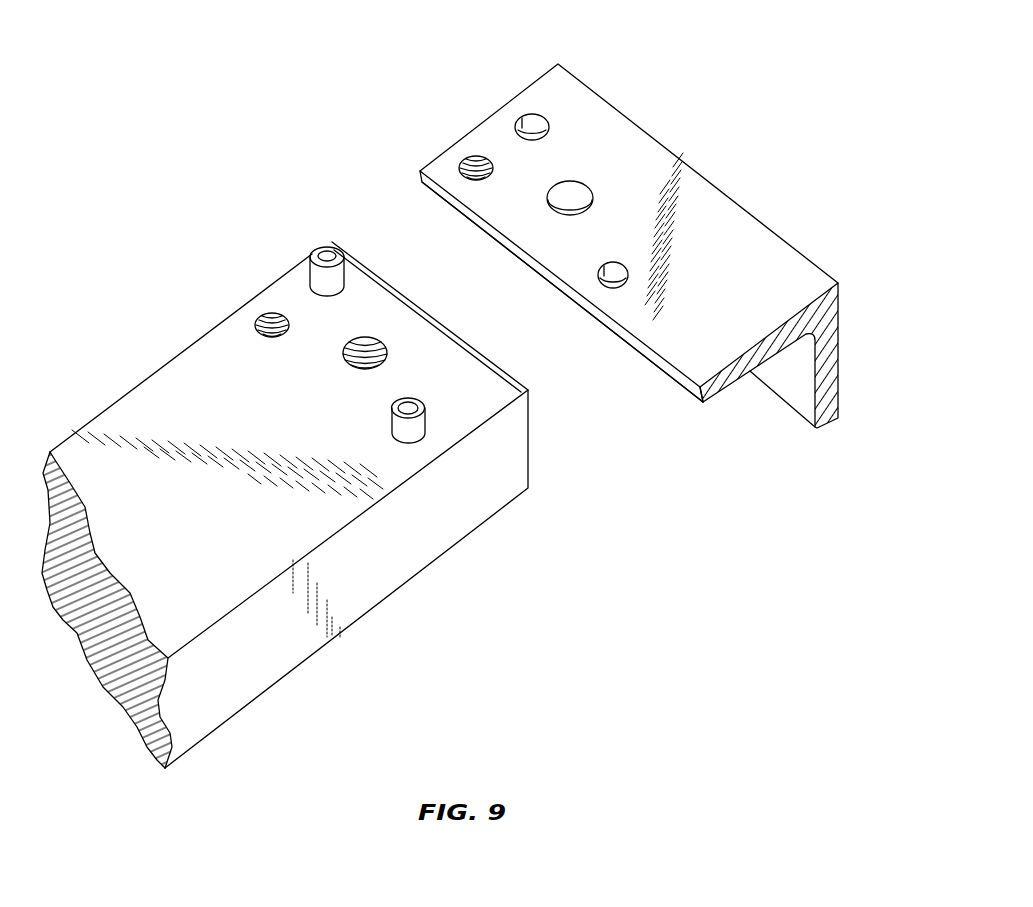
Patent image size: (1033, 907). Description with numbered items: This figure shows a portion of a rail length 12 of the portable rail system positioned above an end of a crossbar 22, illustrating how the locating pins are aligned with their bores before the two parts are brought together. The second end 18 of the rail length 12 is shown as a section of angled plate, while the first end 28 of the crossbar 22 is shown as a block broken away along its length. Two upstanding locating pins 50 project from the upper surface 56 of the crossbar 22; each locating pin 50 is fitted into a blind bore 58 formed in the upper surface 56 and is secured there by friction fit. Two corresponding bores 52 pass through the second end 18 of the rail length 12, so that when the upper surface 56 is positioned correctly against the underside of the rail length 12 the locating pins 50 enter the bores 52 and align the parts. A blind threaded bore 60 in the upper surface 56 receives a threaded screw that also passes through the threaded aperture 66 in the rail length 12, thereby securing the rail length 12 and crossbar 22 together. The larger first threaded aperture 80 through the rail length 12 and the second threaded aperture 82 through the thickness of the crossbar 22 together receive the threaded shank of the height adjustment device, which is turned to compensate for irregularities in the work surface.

The rail length 12 is at (642, 333).
The second end 18 is at (460, 213).
The crossbar 22 is at (307, 523).
The first end 28 is at (497, 365).
The locating pin 50 is at (307, 252).
The bore 52 is at (530, 122).
The upper surface 56 is at (243, 449).
The blind bore 58 is at (312, 285).
The threaded bore 60 is at (260, 320).
The threaded aperture 66 is at (470, 158).
The first threaded aperture 80 is at (580, 190).
The second threaded aperture 82 is at (378, 340).